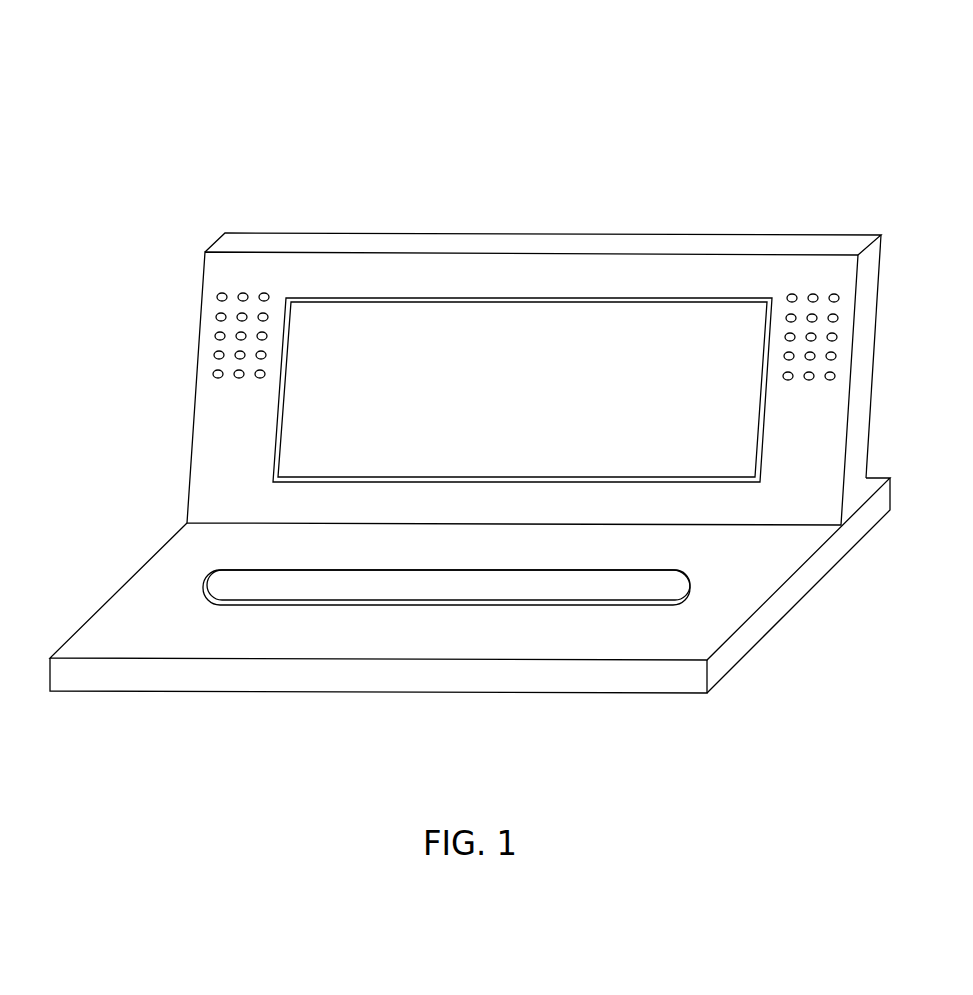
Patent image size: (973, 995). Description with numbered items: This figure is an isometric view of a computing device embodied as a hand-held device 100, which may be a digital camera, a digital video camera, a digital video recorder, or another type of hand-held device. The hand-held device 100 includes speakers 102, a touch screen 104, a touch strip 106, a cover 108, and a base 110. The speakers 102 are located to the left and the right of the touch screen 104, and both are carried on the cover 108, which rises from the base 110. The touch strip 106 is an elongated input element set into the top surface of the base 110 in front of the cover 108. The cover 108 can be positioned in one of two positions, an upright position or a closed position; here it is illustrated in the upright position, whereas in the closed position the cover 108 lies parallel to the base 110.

The hand-held device 100 is at (784, 122).
The speakers 102 is at (839, 296).
The touch screen 104 is at (568, 298).
The touch strip 106 is at (655, 585).
The cover 108 is at (855, 418).
The base 110 is at (822, 560).